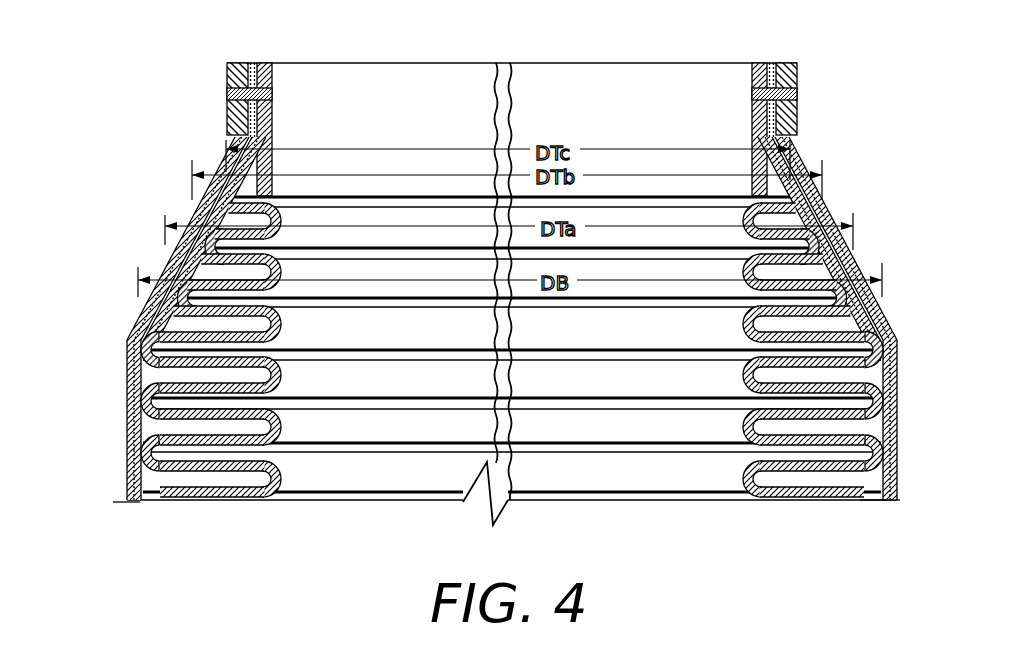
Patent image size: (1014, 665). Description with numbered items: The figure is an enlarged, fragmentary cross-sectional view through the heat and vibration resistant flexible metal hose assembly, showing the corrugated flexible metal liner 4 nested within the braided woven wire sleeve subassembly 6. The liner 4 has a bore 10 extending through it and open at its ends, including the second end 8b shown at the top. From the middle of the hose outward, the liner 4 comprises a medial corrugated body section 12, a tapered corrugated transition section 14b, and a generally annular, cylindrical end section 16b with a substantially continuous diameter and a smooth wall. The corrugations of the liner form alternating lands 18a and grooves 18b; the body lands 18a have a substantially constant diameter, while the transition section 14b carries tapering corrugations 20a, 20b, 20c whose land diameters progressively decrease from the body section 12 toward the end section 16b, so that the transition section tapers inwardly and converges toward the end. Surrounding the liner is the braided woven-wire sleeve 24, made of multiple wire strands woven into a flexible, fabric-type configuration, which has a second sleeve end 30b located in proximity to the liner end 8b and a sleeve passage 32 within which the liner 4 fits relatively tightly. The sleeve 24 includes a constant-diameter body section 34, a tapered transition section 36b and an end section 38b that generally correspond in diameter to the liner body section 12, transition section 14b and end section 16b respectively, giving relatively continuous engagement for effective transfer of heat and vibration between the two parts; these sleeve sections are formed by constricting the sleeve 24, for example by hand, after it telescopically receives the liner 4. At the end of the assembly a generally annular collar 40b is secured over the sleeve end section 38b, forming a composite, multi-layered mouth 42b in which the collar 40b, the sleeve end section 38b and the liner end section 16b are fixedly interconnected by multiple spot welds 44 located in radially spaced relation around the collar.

The corrugated flexible metal liner 4 is at (873, 506).
The braided woven wire sleeve subassembly 6 is at (126, 503).
The second end 8b is at (770, 69).
The bore 10 is at (758, 421).
The medial corrugated body section 12 is at (900, 467).
The second tapered corrugated transition section 14b is at (888, 318).
The second end section 16b is at (272, 118).
The lands 18a is at (130, 424).
The grooves 18b is at (264, 428).
The tapering corrugation 20a is at (140, 331).
The tapering corrugation 20b is at (165, 258).
The tapering corrugation 20c is at (197, 208).
The braided woven-wire sleeve 24 is at (130, 467).
The second sleeve end 30b is at (253, 66).
The sleeve passage 32 is at (903, 427).
The constant-diameter body section 34 is at (900, 500).
The second tapered transition section 36b is at (862, 262).
The second end section 38b is at (752, 118).
The second collar 40b is at (797, 63).
The second mouth 42b is at (750, 78).
The spot welds 44 is at (228, 96).